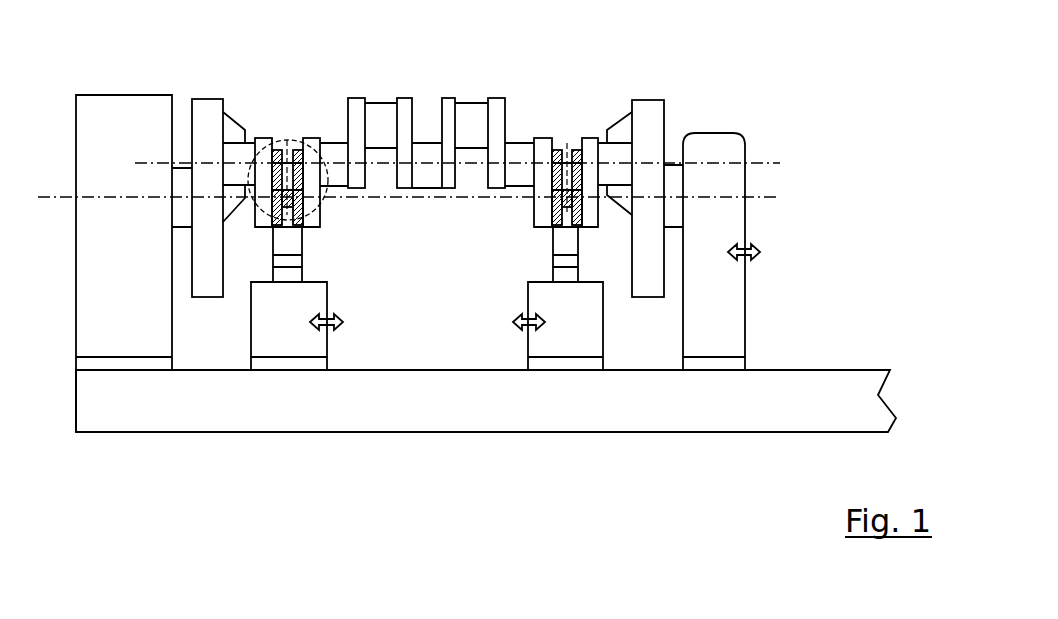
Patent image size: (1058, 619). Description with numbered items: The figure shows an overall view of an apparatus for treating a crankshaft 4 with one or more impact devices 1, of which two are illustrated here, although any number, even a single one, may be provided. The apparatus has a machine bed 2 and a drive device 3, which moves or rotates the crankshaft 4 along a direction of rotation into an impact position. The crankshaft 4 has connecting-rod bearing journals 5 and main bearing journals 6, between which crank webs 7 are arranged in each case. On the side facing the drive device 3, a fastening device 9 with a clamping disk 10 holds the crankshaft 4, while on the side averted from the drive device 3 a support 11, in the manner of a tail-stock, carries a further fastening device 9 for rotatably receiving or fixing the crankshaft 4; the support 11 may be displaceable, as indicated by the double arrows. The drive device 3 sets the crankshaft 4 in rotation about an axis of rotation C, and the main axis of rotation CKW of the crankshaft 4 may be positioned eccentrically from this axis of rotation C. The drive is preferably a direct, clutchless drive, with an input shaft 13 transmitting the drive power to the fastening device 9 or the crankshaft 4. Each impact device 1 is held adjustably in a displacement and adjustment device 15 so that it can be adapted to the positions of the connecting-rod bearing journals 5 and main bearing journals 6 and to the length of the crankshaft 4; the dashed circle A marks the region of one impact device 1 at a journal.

The impact device 1 is at (423, 178).
The machine bed 2 is at (822, 385).
The drive device 3 is at (131, 302).
The crankshaft 4 is at (450, 100).
The connecting-rod bearing journal 5 is at (380, 103).
The main bearing journal 6 is at (430, 147).
The crank web 7 is at (406, 98).
The fastening device 9 is at (231, 97).
The clamping disk 10 is at (205, 105).
The support 11 is at (738, 172).
The input shaft 13 is at (182, 213).
The displacement and adjustment device 15 is at (313, 345).
The bearing region A is at (290, 147).
The axis of rotation C is at (64, 197).
The main axis of rotation of the crankshaft CKW is at (708, 163).